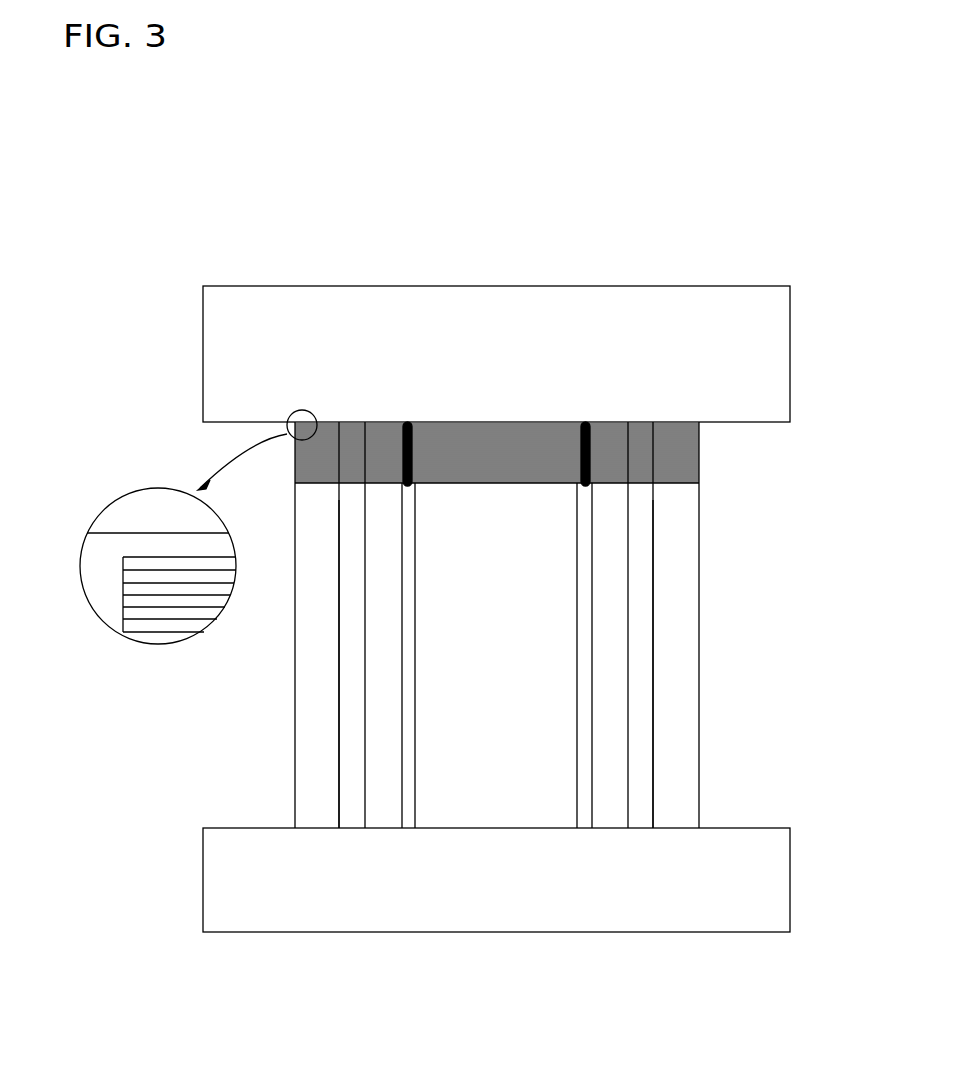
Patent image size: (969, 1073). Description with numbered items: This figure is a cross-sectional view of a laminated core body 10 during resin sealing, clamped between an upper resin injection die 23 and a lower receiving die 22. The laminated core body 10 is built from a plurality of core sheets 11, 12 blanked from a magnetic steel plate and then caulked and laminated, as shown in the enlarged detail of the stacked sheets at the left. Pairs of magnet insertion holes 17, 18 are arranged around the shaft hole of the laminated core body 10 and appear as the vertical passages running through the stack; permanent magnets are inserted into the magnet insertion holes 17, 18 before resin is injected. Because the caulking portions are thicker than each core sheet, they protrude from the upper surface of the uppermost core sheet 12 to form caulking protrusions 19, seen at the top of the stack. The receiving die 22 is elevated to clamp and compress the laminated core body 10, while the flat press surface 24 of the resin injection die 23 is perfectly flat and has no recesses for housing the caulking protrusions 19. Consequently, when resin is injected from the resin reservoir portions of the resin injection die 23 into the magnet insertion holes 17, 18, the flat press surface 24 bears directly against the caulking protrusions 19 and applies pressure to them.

The laminated core body 10 is at (518, 522).
The core sheet 11 is at (125, 578).
The core sheet 12 is at (125, 566).
The magnet insertion hole 17 is at (645, 752).
The magnet insertion hole 18 is at (352, 745).
The caulking protrusion 19 is at (408, 422).
The receiving die 22 is at (773, 877).
The resin injection die 23 is at (765, 343).
The flat press surface 24 is at (538, 422).